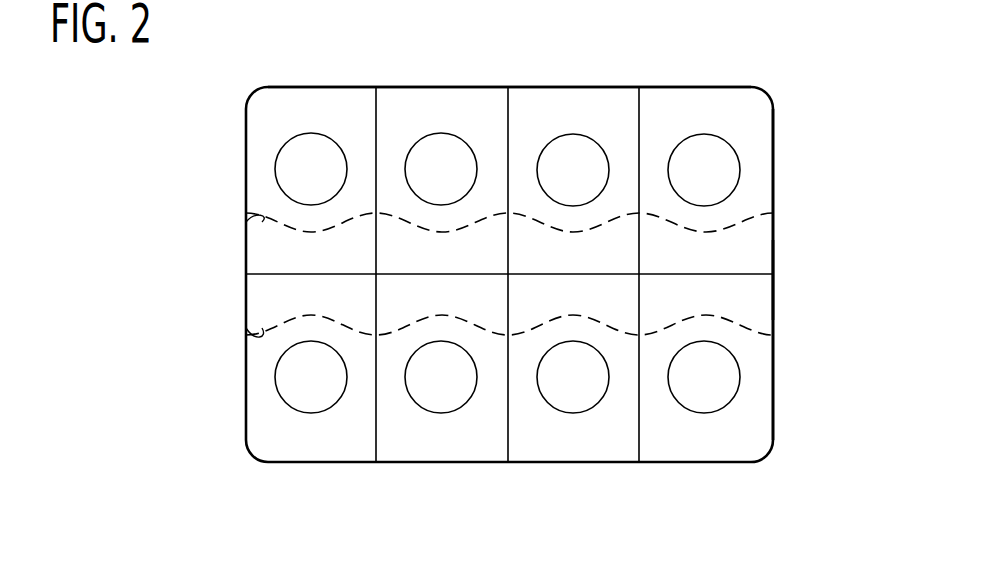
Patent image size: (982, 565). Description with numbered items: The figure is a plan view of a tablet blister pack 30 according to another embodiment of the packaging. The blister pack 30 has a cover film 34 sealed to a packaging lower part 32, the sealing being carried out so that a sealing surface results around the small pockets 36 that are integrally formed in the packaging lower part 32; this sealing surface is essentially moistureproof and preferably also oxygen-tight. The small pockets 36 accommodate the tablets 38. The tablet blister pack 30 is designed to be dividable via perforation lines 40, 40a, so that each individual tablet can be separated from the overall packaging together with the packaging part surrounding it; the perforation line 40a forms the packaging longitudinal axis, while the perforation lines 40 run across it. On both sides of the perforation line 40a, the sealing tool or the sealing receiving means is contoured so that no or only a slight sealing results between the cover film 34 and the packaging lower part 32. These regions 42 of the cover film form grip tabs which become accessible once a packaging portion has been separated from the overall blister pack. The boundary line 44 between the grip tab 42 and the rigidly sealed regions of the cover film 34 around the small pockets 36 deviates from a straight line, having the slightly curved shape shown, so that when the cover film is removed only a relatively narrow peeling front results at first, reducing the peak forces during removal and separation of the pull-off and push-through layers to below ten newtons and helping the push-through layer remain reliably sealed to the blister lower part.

The tablet blister pack 30 is at (786, 89).
The packaging lower part 32 is at (789, 141).
The cover film 34 is at (686, 100).
The small pockets 36 is at (726, 370).
The tablets 38 is at (738, 183).
The perforation lines 40 is at (639, 107).
The perforation line forming the packaging longitudinal axis 40a is at (265, 274).
The grip tabs 42 is at (776, 251).
The boundary line 44 is at (245, 221).